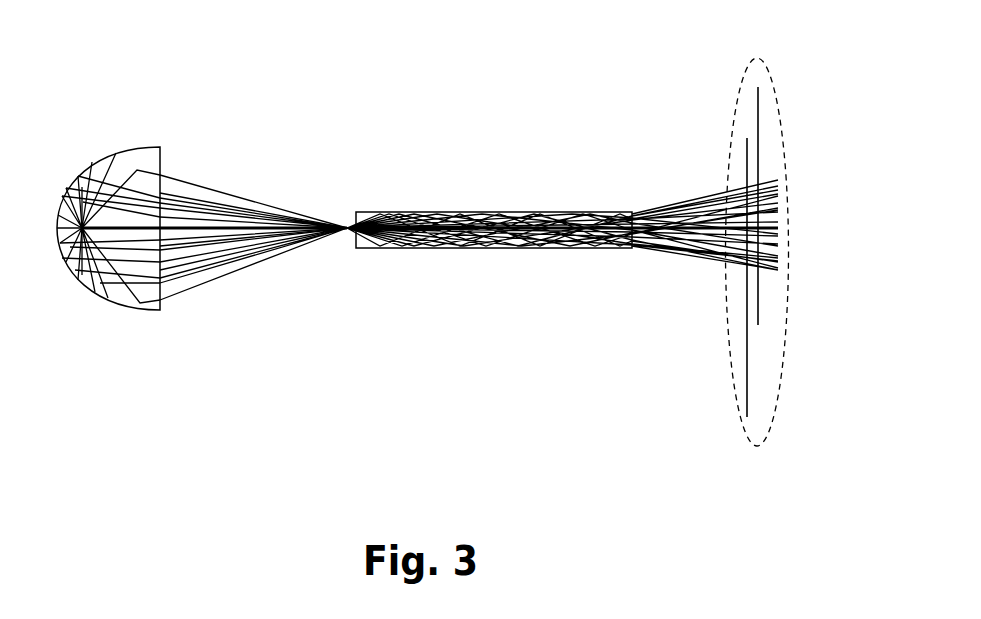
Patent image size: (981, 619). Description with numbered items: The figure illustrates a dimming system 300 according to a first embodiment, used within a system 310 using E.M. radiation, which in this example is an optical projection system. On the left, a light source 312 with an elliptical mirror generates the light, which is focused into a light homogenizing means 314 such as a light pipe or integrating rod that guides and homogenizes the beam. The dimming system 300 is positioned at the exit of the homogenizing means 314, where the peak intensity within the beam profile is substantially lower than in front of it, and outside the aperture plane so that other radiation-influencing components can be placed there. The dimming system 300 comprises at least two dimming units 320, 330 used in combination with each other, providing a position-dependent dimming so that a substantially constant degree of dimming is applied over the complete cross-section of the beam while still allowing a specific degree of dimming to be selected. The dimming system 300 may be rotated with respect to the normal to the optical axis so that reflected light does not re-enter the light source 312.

The dimming system 300 is at (727, 358).
The system using E.M. radiation 310 is at (140, 99).
The light source 312 is at (117, 298).
The light homogenizing means 314 is at (400, 212).
The dimming unit 320 is at (748, 383).
The dimming unit 330 is at (758, 103).